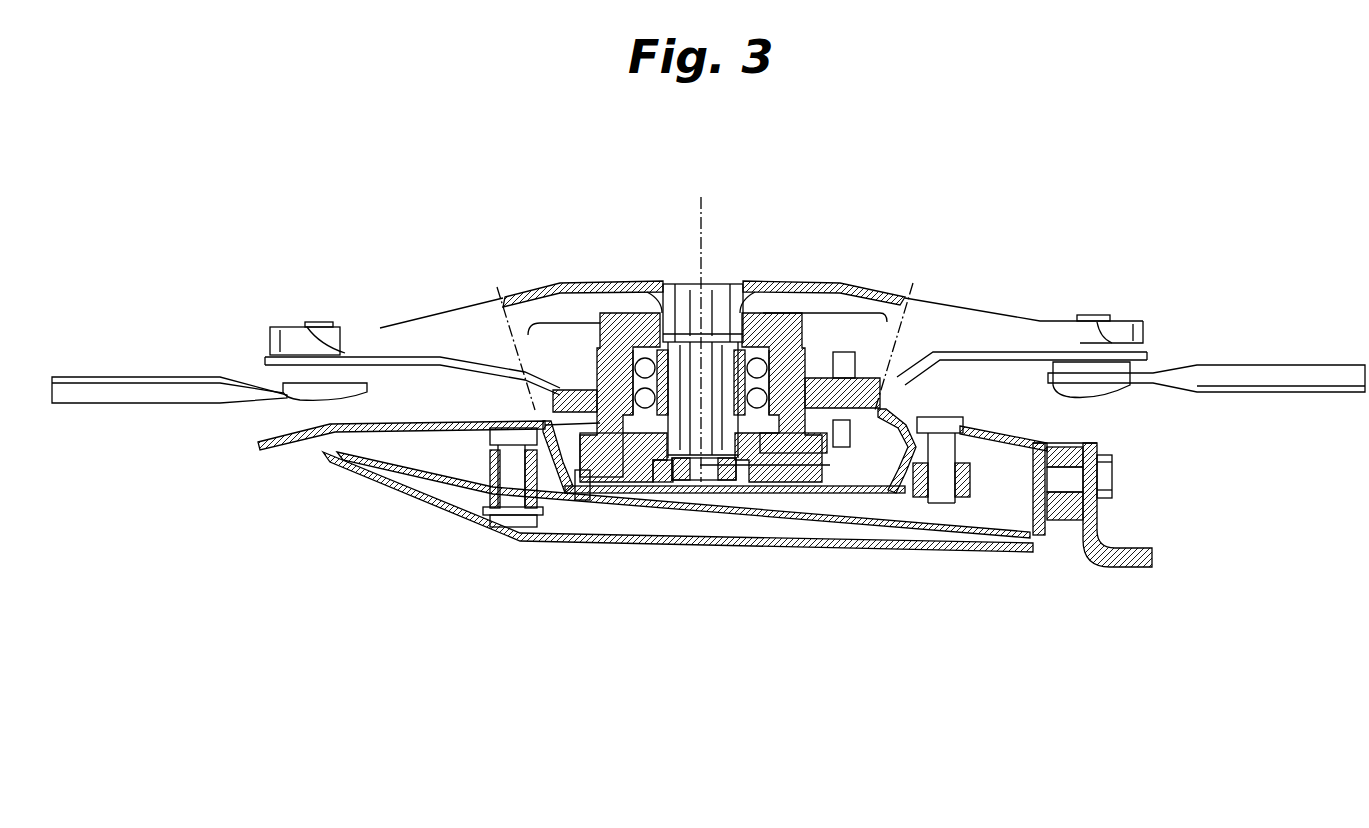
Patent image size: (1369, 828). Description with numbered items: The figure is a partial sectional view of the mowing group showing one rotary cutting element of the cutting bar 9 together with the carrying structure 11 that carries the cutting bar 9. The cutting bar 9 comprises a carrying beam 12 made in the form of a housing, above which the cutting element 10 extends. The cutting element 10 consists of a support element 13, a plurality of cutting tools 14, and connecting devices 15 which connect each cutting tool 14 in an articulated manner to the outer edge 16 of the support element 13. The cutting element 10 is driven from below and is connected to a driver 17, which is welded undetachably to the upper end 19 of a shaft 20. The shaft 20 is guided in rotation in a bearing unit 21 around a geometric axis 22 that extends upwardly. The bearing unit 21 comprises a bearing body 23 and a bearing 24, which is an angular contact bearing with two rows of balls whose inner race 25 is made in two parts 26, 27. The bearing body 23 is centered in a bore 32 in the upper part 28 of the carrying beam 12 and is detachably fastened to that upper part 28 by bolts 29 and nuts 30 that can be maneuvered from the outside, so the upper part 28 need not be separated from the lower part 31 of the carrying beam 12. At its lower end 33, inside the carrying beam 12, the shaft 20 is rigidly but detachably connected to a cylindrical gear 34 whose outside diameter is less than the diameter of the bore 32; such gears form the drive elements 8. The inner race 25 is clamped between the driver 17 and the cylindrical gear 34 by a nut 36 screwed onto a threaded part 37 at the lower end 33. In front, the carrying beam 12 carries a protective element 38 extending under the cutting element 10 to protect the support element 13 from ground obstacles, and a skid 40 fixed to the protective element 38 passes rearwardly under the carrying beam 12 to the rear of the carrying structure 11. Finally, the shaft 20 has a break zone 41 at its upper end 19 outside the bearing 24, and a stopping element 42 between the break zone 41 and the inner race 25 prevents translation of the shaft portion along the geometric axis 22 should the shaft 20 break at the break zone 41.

The drive elements 8 is at (585, 478).
The cutting bar 9 is at (356, 504).
The rotary cutting element 10 is at (413, 320).
The carrying structure 11 is at (1010, 422).
The carrying beam 12 is at (548, 505).
The support element 13 is at (872, 295).
The cutting tool 14 is at (125, 390).
The connecting device 15 is at (345, 392).
The outer edge 16 is at (270, 362).
The driver 17 is at (610, 317).
The upper end 19 is at (710, 285).
The shaft 20 is at (733, 285).
The bearing unit 21 is at (884, 395).
The geometric axis 22 is at (701, 197).
The bearing body 23 is at (563, 392).
The bearing 24 is at (817, 367).
The inner race 25 is at (740, 362).
The part of inner race 26 is at (760, 463).
The part of inner race 27 is at (710, 313).
The upper part 28 is at (900, 423).
The bolt 29 is at (601, 482).
The nut 30 is at (580, 387).
The lower part 31 is at (866, 488).
The bore 32 is at (567, 423).
The lower end 33 is at (723, 462).
The cylindrical gear 34 is at (838, 475).
The nut 36 is at (661, 490).
The threaded part 37 is at (712, 490).
The protective element 38 is at (257, 437).
The skid 40 is at (452, 525).
The break zone 41 is at (696, 285).
The stopping element 42 is at (673, 285).